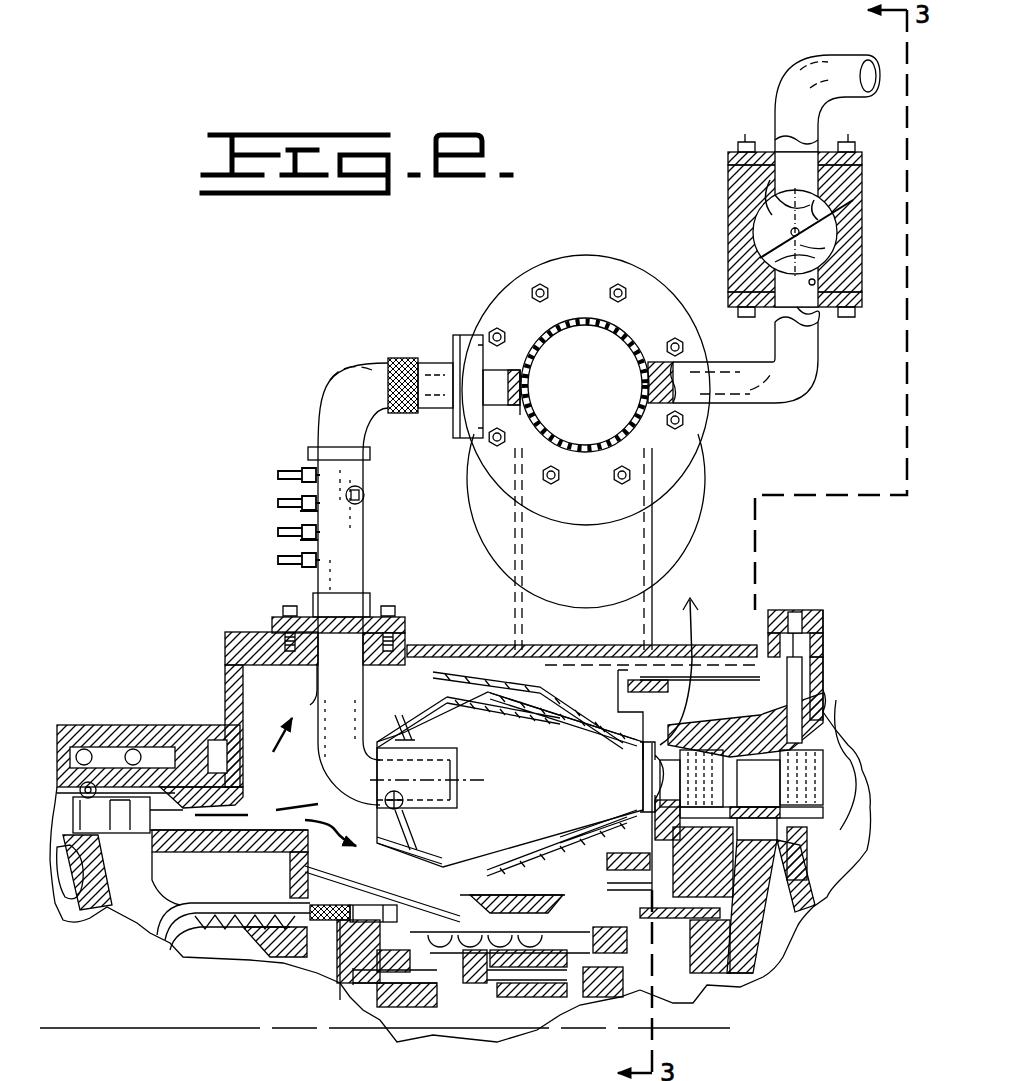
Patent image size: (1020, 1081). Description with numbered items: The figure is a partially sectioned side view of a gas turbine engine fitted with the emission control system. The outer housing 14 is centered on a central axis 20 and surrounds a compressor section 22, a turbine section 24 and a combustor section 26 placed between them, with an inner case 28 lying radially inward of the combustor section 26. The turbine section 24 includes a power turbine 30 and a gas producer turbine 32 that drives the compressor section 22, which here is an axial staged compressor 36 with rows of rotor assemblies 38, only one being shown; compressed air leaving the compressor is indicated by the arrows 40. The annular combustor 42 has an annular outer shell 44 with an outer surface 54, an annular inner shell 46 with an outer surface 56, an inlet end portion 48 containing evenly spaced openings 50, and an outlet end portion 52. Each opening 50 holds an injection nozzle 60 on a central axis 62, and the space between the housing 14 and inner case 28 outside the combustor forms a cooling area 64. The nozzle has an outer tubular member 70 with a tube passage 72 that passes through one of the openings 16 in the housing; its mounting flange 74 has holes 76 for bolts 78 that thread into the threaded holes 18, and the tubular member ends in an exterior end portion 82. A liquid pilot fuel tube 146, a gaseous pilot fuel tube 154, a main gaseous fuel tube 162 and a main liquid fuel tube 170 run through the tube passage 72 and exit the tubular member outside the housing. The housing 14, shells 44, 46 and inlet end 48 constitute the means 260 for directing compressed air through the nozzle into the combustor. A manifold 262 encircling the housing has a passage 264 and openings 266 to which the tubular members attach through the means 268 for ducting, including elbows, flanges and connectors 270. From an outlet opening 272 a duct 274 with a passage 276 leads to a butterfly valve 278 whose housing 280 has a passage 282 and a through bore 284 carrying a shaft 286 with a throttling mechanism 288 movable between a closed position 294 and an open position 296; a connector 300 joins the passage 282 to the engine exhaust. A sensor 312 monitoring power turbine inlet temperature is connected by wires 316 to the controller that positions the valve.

The outer housing 14 is at (710, 640).
The openings 16 is at (305, 672).
The threaded holes 18 is at (232, 650).
The central axis 20 is at (333, 1030).
The compressor section 22 is at (92, 692).
The turbine section 24 is at (740, 1000).
The combustor section 26 is at (495, 603).
The inner case 28 is at (410, 895).
The power turbine 30 is at (837, 884).
The gas producer turbine 32 is at (790, 940).
The axial staged compressor 36 is at (110, 888).
The rotor assemblies 38 is at (60, 895).
The arrows 40 is at (283, 825).
The annular combustor 42 is at (545, 735).
The annular outer shell 44 is at (445, 700).
The annular inner shell 46 is at (400, 855).
The inlet end portion 48 is at (405, 720).
The openings 50 is at (415, 748).
The outlet end portion 52 is at (645, 765).
The outer surface 54 is at (475, 692).
The outer surface 56 is at (480, 860).
The injection nozzle 60 is at (300, 512).
The central axis 62 is at (472, 760).
The cooling area 64 is at (345, 632).
The outer tubular member 70 is at (318, 720).
The tube passage 72 is at (365, 495).
The mounting flange 74 is at (283, 608).
The holes 76 is at (275, 630).
The bolts 78 is at (282, 560).
The exterior end portion 82 is at (335, 452).
The liquid pilot fuel tube 146 is at (300, 540).
The gaseous pilot fuel tube 154 is at (282, 532).
The main gaseous fuel tube 162 is at (282, 503).
The main liquid fuel tube 170 is at (282, 474).
The means for directing 260 is at (160, 592).
The manifold 262 is at (655, 524).
The passage 264 is at (603, 361).
The openings 266 is at (521, 398).
The means for ducting 268 is at (288, 362).
The elbows, flanges and connectors 270 is at (385, 413).
The outlet opening 272 is at (645, 383).
The duct 274 is at (765, 405).
The passage 276 is at (815, 330).
The valve 278 is at (728, 180).
The housing 280 is at (862, 255).
The passage 282 is at (830, 282).
The through bore 284 is at (830, 235).
The shaft 286 is at (820, 250).
The throttling mechanism 288 is at (825, 205).
The closed position 294 is at (728, 145).
The open position 296 is at (760, 235).
The connector 300 is at (790, 65).
The sensor 312 is at (695, 720).
The wires 316 is at (710, 569).